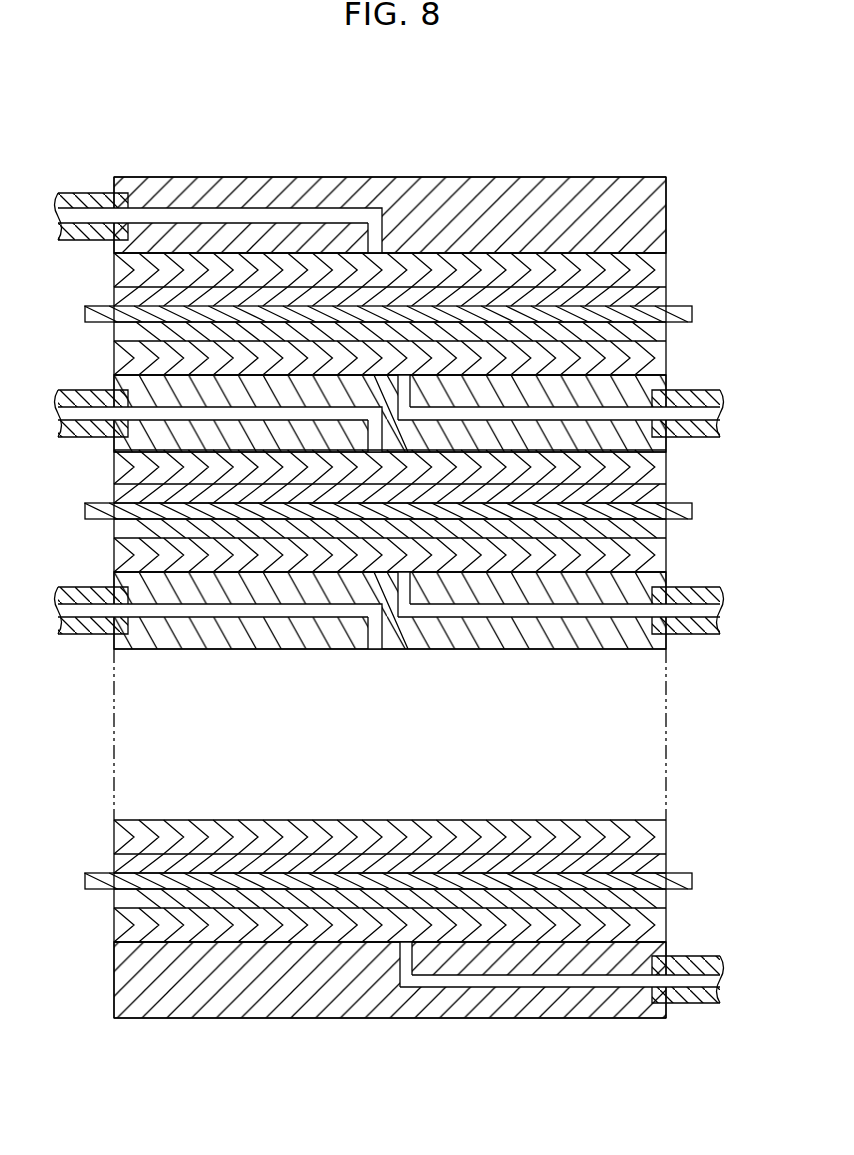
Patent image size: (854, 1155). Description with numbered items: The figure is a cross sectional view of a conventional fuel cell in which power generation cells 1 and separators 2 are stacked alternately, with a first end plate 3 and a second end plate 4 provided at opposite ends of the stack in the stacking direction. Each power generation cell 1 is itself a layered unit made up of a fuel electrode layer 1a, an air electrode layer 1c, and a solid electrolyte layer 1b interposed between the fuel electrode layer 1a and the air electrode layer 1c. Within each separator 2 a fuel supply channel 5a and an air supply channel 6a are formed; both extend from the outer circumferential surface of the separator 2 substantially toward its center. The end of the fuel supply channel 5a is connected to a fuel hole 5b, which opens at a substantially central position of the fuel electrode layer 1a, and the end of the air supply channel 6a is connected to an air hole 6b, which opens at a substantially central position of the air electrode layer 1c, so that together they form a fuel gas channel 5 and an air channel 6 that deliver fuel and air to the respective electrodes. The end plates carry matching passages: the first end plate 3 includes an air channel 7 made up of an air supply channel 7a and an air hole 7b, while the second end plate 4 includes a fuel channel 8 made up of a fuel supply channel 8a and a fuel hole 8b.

The power generation cell 1 is at (388, 233).
The fuel electrode layer 1a is at (577, 335).
The solid electrolyte layer 1b is at (540, 313).
The air electrode layer 1c is at (487, 285).
The separator 2 is at (389, 661).
The first end plate 3 is at (376, 172).
The second end plate 4 is at (419, 1030).
The fuel gas channel 5 is at (559, 661).
The fuel supply channel 5a is at (547, 607).
The fuel hole 5b is at (428, 639).
The air channel 6 is at (220, 676).
The air supply channel 6a is at (307, 607).
The air hole 6b is at (366, 655).
The air channel 7 is at (220, 172).
The air supply channel 7a is at (234, 210).
The air hole 7b is at (353, 195).
The fuel channel 8 is at (560, 1030).
The fuel supply channel 8a is at (543, 977).
The fuel hole 8b is at (410, 970).